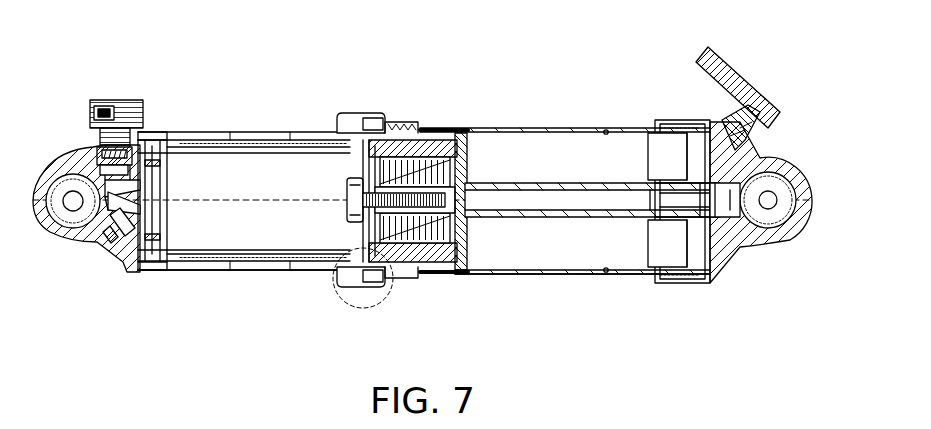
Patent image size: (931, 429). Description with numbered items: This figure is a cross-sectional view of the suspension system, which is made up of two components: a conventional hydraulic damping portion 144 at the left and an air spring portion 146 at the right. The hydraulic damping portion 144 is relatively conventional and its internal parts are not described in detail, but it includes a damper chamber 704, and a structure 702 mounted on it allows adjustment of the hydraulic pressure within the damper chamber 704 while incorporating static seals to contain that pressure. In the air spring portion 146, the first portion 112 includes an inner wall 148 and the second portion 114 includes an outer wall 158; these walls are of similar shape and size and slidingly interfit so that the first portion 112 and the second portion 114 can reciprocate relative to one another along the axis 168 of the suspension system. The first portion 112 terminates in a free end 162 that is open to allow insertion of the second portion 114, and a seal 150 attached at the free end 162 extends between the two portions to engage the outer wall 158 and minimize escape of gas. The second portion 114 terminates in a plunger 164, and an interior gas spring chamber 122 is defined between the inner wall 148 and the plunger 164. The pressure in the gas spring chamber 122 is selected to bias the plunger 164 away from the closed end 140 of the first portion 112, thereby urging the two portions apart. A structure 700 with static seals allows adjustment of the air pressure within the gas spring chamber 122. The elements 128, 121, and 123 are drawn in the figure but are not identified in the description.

The hydraulic pressure adjustment structure 702 is at (90, 82).
The outer wall 158 is at (176, 133).
The inner cylinder tube 128 is at (207, 133).
The axis 168 is at (243, 193).
The second portion 114 is at (298, 133).
The seal 150 is at (364, 118).
The free end 162 is at (412, 180).
The piston seal 121 is at (438, 130).
The first portion 112 is at (492, 128).
The gas spring chamber 122 is at (552, 138).
The inner wall 148 is at (607, 130).
The air pressure adjustment structure 700 is at (747, 57).
The hydraulic damping portion 144 is at (205, 279).
The damper chamber 704 is at (233, 236).
The plunger 164 is at (466, 270).
The piston rod 123 is at (556, 217).
The air spring portion 146 is at (597, 298).
The closed end 140 is at (690, 298).